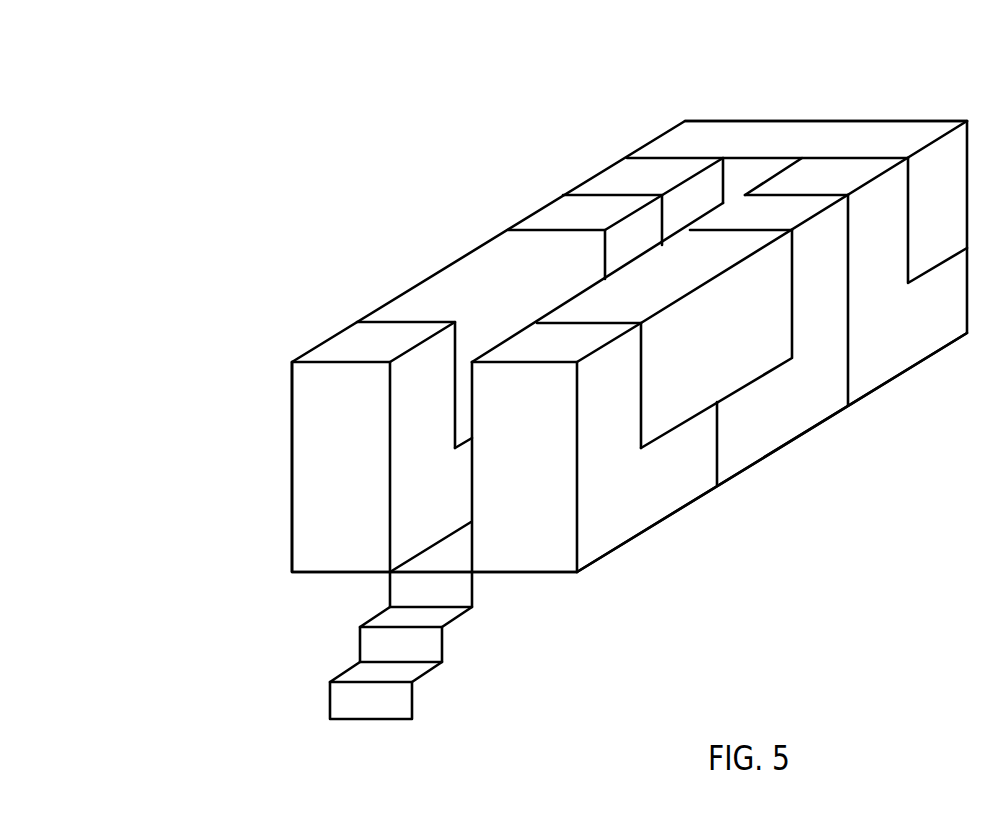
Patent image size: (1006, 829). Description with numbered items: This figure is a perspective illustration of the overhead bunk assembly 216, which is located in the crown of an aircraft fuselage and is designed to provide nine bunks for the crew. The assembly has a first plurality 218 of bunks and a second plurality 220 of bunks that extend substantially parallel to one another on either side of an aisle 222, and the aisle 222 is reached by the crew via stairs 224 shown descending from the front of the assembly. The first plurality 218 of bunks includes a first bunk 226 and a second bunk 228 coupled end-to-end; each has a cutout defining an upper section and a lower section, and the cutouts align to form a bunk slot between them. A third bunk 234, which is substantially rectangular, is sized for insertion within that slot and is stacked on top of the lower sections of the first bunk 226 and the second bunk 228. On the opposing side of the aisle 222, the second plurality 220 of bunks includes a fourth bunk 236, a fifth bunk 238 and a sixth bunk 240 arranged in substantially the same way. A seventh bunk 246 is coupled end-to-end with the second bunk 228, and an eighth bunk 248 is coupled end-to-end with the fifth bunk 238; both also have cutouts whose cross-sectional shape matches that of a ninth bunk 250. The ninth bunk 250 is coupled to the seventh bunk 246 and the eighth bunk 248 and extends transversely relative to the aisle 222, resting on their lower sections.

The overhead bunk assembly 216 is at (828, 62).
The first plurality of bunks 218 is at (250, 512).
The second plurality of bunks 220 is at (639, 572).
The aisle 222 is at (406, 534).
The stairs 224 is at (412, 702).
The first bunk 226 is at (345, 342).
The second bunk 228 is at (553, 212).
The third bunk 234 is at (457, 272).
The fourth bunk 236 is at (638, 513).
The fifth bunk 238 is at (795, 417).
The sixth bunk 240 is at (697, 375).
The seventh bunk 246 is at (617, 175).
The eighth bunk 248 is at (906, 349).
The ninth bunk 250 is at (913, 127).